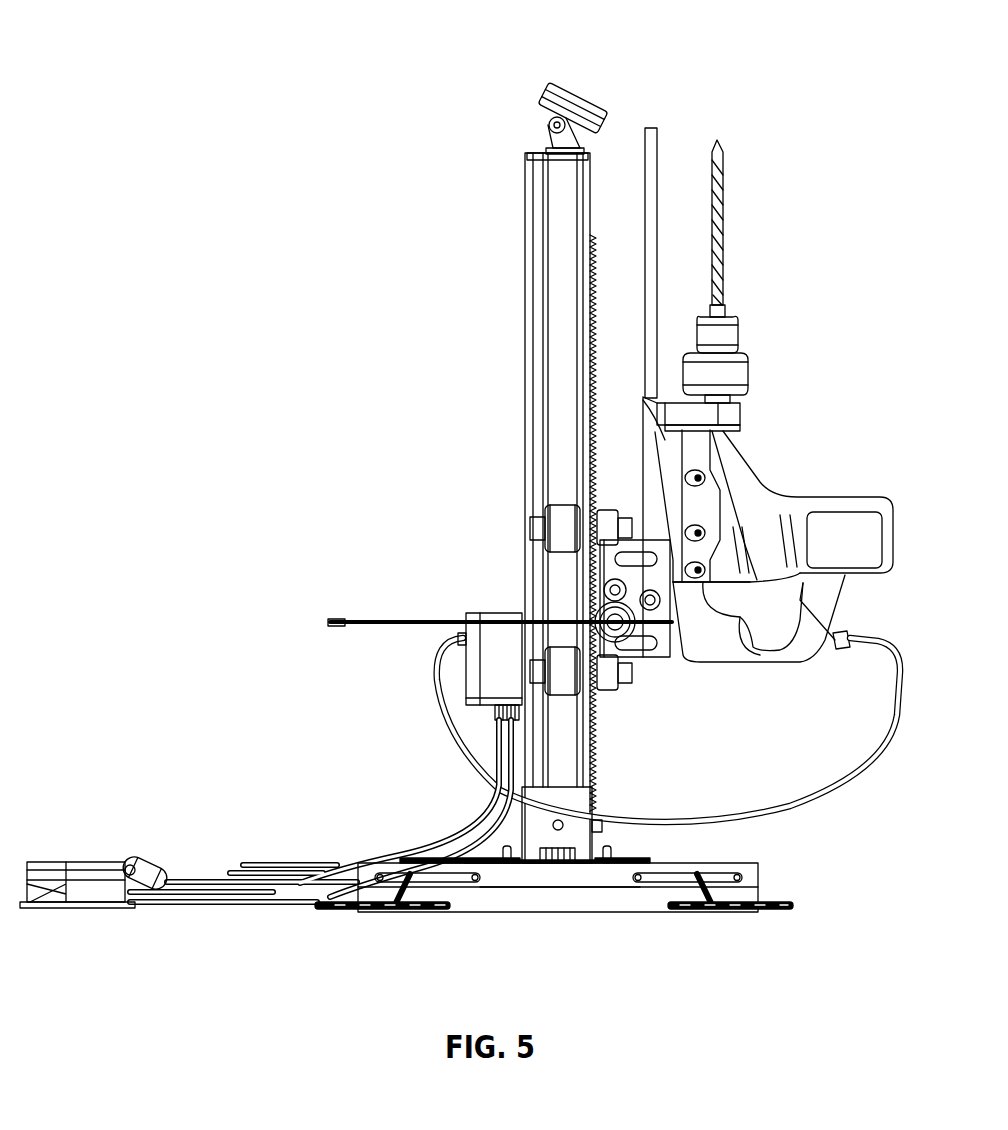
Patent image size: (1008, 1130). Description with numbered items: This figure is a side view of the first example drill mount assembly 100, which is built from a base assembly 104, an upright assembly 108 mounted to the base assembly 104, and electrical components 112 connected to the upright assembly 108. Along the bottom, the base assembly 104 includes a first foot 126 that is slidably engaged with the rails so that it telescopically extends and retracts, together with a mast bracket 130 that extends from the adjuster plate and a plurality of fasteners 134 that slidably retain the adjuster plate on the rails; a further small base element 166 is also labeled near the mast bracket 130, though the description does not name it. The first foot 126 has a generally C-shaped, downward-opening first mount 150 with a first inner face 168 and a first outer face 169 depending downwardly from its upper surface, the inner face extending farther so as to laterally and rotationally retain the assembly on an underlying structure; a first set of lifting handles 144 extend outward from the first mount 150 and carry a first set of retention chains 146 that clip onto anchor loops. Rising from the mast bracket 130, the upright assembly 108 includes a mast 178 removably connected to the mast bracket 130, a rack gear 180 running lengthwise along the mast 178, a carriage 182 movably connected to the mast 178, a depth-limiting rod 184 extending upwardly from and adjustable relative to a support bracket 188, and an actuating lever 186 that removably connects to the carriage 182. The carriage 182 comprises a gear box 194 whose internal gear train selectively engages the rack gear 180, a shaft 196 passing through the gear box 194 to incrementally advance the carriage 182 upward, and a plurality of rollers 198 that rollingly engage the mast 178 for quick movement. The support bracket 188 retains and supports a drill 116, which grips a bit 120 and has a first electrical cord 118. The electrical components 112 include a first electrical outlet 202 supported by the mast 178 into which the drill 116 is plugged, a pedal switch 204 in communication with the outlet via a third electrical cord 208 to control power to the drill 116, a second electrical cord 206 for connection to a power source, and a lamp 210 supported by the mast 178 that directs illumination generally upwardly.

The drill mount assembly 100 is at (252, 48).
The base assembly 104 is at (718, 940).
The upright assembly 108 is at (492, 277).
The electrical components 112 is at (82, 832).
The drill 116 is at (742, 373).
The first electrical cord 118 is at (858, 645).
The bit 120 is at (720, 245).
The first foot 126 is at (755, 875).
The mast bracket 130 is at (578, 828).
The fasteners 134 is at (578, 855).
The first set of lifting handles 144 is at (668, 892).
The first set of retention chains 146 is at (345, 912).
The first mount 150 is at (566, 882).
The locating pin 166 is at (505, 850).
The first inner face 168 is at (500, 900).
The first outer face 169 is at (762, 888).
The mast 178 is at (545, 230).
The rack gear 180 is at (600, 240).
The carriage 182 is at (698, 684).
The depth-limiting rod 184 is at (657, 133).
The actuating lever 186 is at (348, 618).
The support bracket 188 is at (652, 485).
The gear box 194 is at (655, 552).
The shaft 196 is at (620, 642).
The rollers 198 is at (565, 510).
The first electrical outlet 202 is at (508, 612).
The pedal switch 204 is at (78, 866).
The second electrical cord 206 is at (152, 862).
The third electrical cord 208 is at (308, 866).
The lamp 210 is at (583, 107).